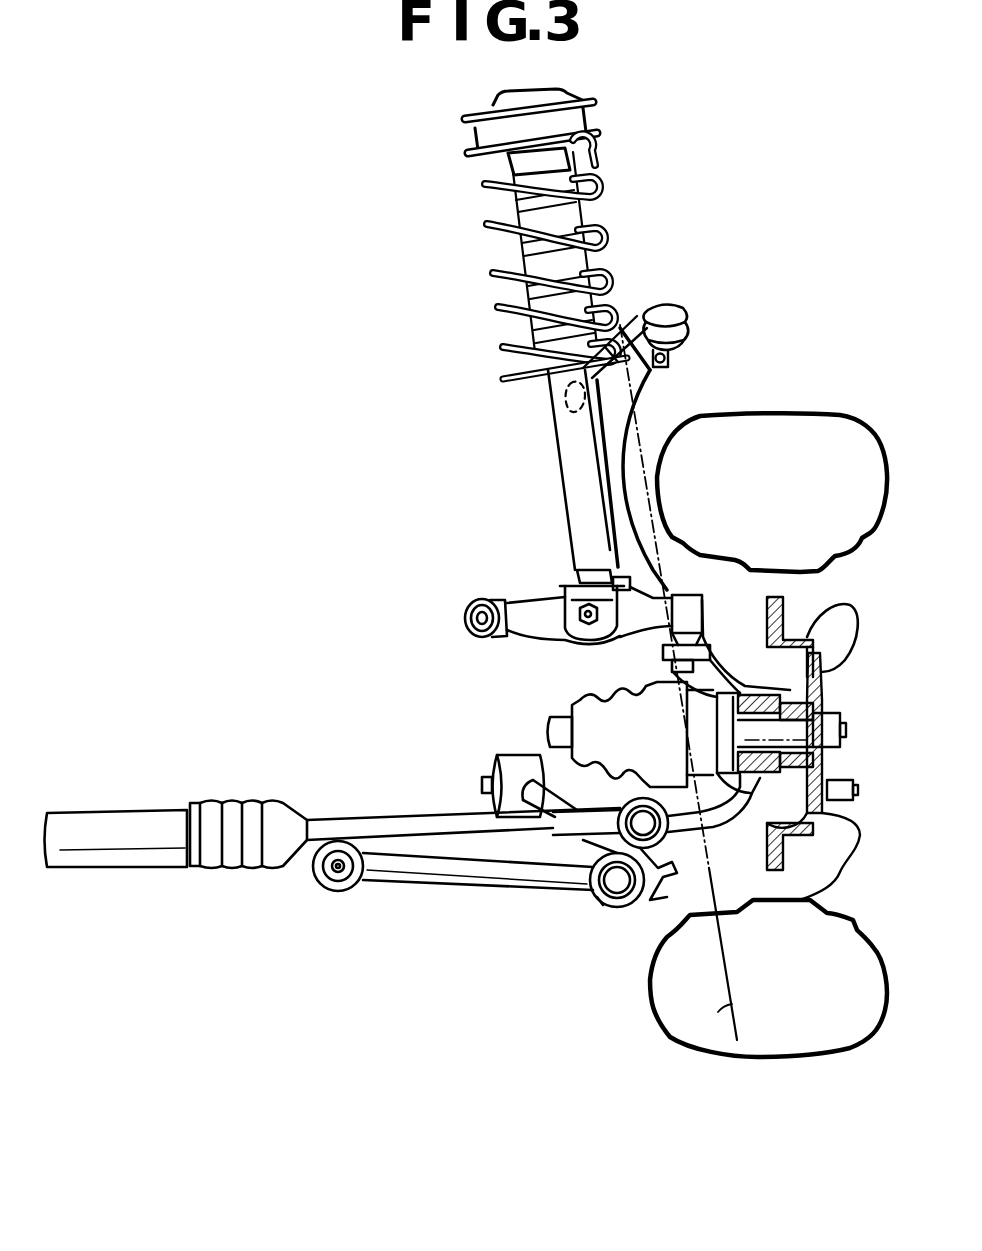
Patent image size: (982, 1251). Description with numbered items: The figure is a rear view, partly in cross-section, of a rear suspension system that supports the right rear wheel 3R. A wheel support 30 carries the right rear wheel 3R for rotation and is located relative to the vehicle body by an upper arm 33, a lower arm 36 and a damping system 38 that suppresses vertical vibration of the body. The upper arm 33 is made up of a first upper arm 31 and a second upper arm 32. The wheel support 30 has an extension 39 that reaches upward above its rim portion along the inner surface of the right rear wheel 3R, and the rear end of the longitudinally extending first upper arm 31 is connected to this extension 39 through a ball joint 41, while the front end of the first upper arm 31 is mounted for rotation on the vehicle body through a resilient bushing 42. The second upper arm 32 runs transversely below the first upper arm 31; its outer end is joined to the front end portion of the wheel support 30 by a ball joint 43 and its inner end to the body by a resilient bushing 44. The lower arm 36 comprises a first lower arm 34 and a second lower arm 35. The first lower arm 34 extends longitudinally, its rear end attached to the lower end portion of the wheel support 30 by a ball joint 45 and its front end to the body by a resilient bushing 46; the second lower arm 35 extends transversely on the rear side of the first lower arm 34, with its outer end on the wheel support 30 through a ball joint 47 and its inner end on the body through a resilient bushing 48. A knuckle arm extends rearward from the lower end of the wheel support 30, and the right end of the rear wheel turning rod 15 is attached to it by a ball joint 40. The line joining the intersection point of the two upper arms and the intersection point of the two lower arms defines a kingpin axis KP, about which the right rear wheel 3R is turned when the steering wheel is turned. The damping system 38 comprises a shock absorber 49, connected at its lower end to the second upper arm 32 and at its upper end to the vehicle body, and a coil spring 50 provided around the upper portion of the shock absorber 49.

The right rear wheel 3R is at (830, 418).
The rear wheel turning rod 15 is at (330, 822).
The wheel support 30 is at (848, 605).
The first upper arm 31 is at (633, 327).
The second upper arm 32 is at (542, 597).
The upper arm 33 is at (686, 257).
The first lower arm 34 is at (523, 818).
The second lower arm 35 is at (410, 878).
The lower arm 36 is at (547, 908).
The damping system 38 is at (618, 203).
The extension 39 is at (642, 372).
The ball joint 40 is at (700, 830).
The ball joint 41 is at (687, 307).
The resilient bushing 42 is at (556, 405).
The ball joint 43 is at (712, 593).
The resilient bushing 44 is at (460, 585).
The ball joint 45 is at (664, 875).
The resilient bushing 46 is at (490, 800).
The ball joint 47 is at (612, 910).
The resilient bushing 48 is at (340, 886).
The shock absorber 49 is at (580, 478).
The coil spring 50 is at (490, 176).
The kingpin axis KP is at (718, 1012).